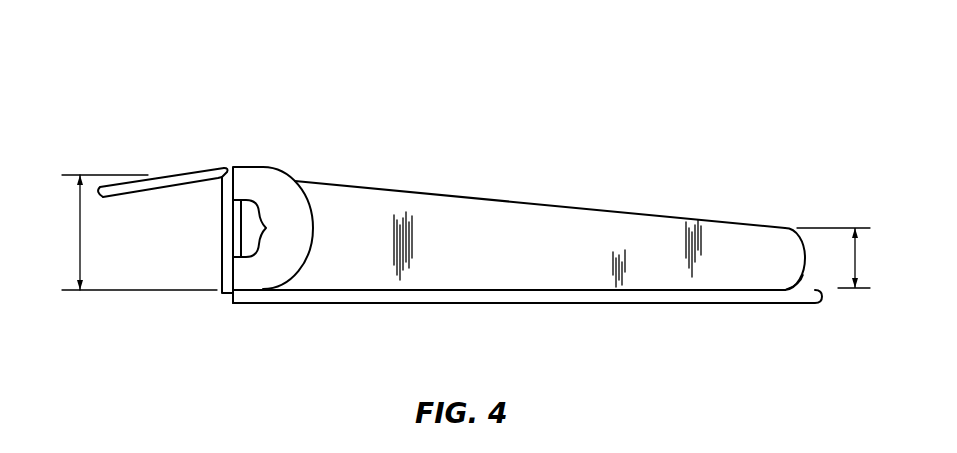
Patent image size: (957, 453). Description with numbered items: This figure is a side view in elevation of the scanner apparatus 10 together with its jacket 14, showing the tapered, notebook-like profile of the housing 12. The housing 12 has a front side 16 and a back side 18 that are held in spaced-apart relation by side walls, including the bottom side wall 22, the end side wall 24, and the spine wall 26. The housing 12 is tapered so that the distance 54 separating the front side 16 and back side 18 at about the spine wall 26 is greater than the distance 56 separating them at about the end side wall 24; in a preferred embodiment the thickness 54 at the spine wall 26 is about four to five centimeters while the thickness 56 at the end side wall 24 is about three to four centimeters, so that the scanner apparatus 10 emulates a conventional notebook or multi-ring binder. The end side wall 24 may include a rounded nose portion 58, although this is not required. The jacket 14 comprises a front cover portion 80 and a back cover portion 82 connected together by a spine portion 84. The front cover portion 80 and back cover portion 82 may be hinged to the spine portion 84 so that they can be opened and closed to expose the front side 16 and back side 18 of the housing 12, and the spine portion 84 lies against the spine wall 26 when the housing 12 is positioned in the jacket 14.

The scanner apparatus 10 is at (240, 60).
The housing 12 is at (730, 222).
The jacket 14 is at (157, 177).
The front side 16 is at (412, 192).
The back side 18 is at (677, 292).
The bottom side wall 22 is at (508, 257).
The end side wall 24 is at (806, 284).
The spine wall 26 is at (242, 228).
The distance 54 is at (81, 232).
The distance 56 is at (855, 258).
The rounded nose portion 58 is at (805, 258).
The front cover portion 80 is at (197, 173).
The back cover portion 82 is at (460, 305).
The spine portion 84 is at (222, 200).